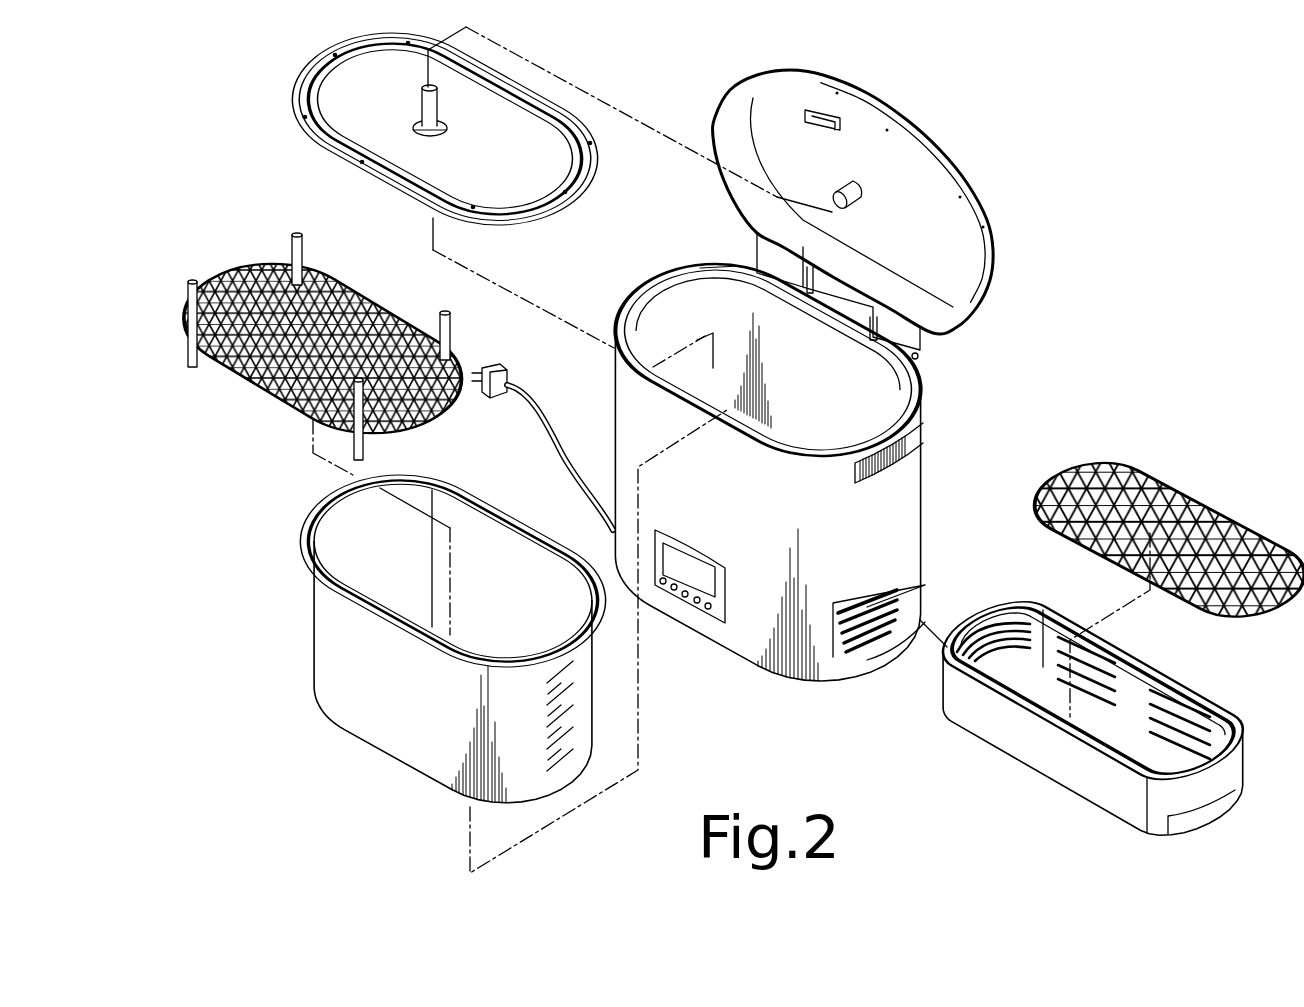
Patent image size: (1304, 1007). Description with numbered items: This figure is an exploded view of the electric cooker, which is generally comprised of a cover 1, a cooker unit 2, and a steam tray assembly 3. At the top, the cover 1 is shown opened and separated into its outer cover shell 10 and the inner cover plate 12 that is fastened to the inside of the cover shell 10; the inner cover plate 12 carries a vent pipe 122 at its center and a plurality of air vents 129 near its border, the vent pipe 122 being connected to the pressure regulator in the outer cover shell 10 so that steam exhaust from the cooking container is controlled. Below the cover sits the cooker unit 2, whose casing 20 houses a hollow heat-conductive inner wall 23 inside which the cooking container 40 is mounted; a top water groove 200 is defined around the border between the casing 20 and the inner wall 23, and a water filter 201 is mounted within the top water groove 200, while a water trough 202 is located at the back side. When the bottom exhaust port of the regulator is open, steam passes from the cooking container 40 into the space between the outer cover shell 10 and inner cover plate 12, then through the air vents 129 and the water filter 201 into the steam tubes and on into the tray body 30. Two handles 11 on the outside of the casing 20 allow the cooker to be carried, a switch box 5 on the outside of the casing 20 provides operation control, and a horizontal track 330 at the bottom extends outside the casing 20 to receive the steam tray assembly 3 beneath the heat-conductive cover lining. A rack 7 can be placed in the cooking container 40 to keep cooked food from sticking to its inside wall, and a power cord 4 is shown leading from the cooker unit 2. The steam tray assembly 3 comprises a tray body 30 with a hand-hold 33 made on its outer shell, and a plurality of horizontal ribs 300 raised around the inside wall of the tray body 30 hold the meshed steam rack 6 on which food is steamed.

The cover 1 is at (985, 183).
The outer cover shell 10 is at (985, 270).
The inner cover plate 12 is at (558, 173).
The air vents 129 is at (597, 135).
The vent pipe 122 is at (448, 121).
The cooker unit 2 is at (935, 485).
The casing 20 is at (633, 412).
The top water groove 200 is at (707, 270).
The water filter 201 is at (617, 320).
The water trough 202 is at (922, 357).
The hollow heat-conductive inner wall 23 is at (670, 320).
The handles 11 is at (915, 425).
The switch box 5 is at (688, 597).
The horizontal track 330 is at (855, 635).
The rack 7 is at (352, 300).
The power cord 4 is at (500, 487).
The cooking container 40 is at (335, 545).
The meshed steam rack 6 is at (1225, 514).
The steam tray assembly 3 is at (1135, 633).
The tray body 30 is at (1145, 690).
The horizontal ribs 300 is at (1020, 633).
The hand-hold 33 is at (1212, 797).